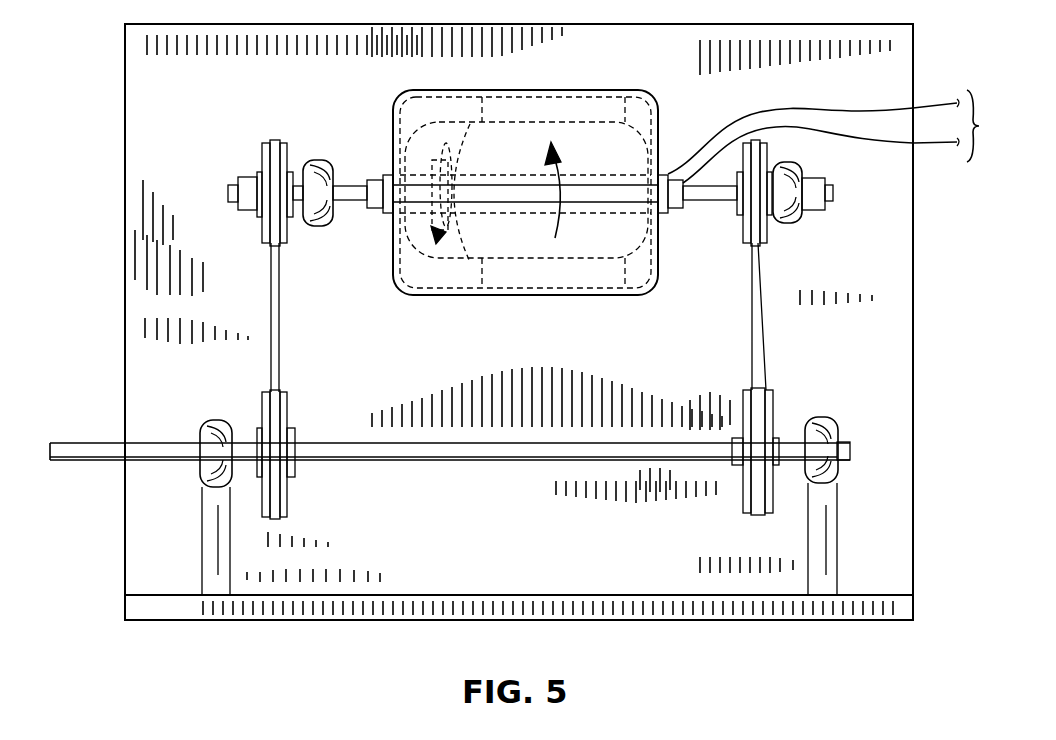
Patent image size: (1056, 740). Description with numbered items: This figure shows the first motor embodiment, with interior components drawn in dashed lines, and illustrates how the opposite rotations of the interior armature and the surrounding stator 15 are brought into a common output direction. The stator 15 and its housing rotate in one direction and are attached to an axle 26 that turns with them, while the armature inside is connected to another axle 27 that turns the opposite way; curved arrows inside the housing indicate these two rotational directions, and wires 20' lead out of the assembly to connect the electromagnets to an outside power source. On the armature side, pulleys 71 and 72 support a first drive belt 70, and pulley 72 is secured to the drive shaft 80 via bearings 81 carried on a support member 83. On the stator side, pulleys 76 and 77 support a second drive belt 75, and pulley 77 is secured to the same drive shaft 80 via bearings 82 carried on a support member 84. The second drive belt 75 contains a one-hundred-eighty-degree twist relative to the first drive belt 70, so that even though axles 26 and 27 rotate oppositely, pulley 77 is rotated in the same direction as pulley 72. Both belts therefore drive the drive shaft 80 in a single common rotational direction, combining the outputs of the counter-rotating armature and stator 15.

The stator 15 is at (558, 90).
The wires 20' is at (845, 136).
The axle 26 is at (713, 205).
The axle 27 is at (353, 178).
The drive belt 70 is at (280, 283).
The pulley 71 is at (262, 148).
The pulley 72 is at (287, 417).
The drive belt 75 is at (765, 356).
The pulley 76 is at (768, 238).
The pulley 77 is at (776, 400).
The drive shaft 80 is at (497, 462).
The bearings 81 is at (216, 424).
The bearings 82 is at (826, 485).
The support member 83 is at (212, 549).
The support member 84 is at (828, 540).